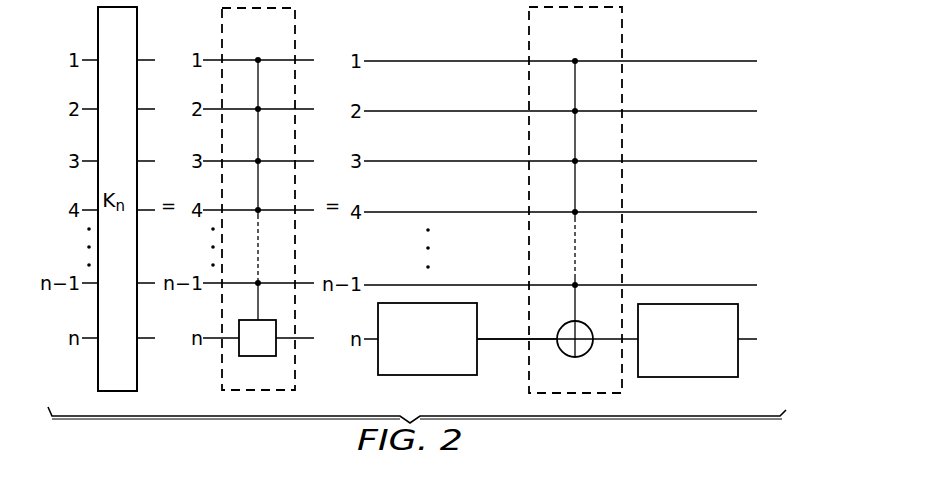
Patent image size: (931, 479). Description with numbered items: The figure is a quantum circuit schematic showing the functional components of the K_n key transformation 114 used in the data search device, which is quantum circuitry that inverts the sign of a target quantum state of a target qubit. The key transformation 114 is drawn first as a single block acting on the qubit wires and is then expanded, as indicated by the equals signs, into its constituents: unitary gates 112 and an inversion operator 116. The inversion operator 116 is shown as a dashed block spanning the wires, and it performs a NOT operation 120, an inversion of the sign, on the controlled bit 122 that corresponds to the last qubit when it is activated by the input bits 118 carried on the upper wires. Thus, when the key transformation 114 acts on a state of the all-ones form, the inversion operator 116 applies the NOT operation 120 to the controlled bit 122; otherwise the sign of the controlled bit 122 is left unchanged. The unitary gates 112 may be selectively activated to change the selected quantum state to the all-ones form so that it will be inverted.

The unitary gates 112 is at (378, 357).
The K_n key transformation 114 is at (98, 361).
The inversion operator 116 is at (221, 367).
The input bits 118 is at (578, 59).
The NOT operation 120 is at (563, 352).
The controlled bit 122 is at (510, 338).